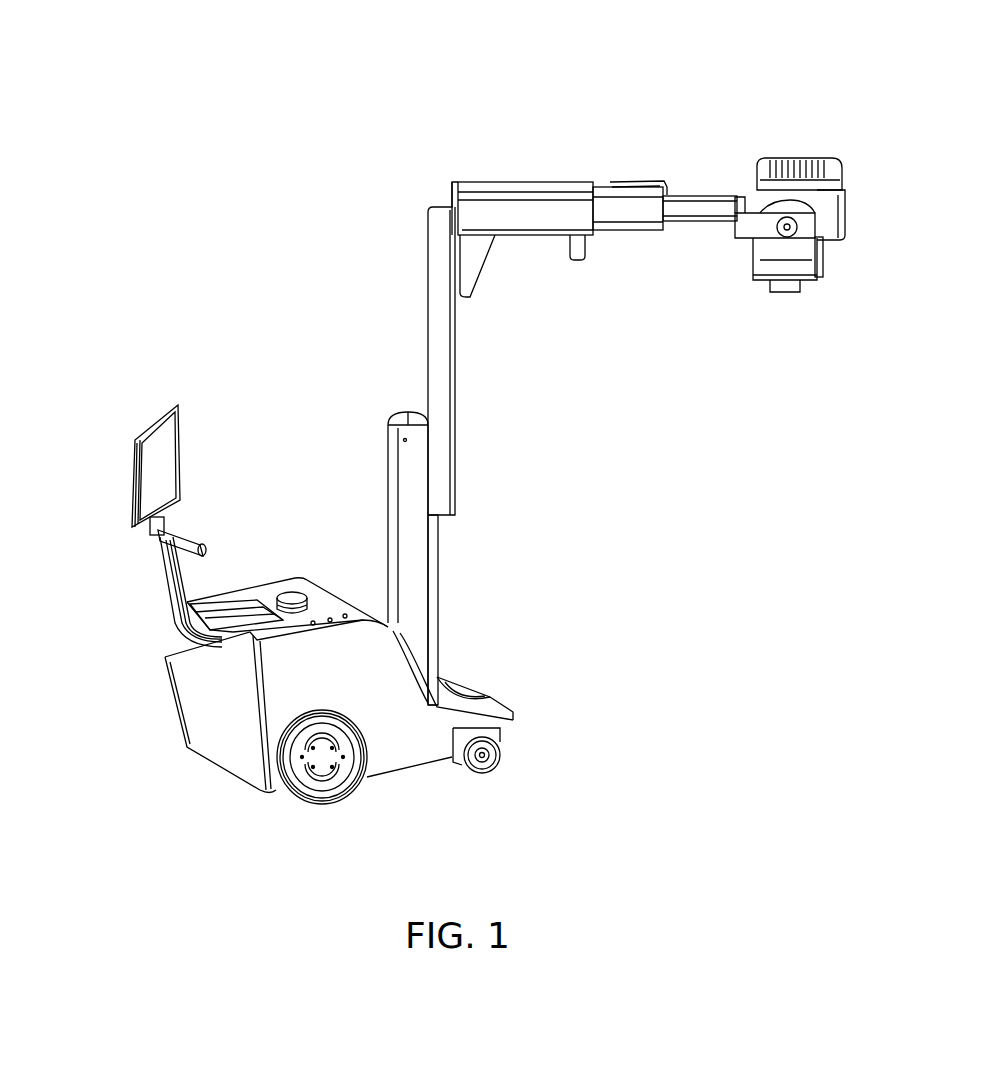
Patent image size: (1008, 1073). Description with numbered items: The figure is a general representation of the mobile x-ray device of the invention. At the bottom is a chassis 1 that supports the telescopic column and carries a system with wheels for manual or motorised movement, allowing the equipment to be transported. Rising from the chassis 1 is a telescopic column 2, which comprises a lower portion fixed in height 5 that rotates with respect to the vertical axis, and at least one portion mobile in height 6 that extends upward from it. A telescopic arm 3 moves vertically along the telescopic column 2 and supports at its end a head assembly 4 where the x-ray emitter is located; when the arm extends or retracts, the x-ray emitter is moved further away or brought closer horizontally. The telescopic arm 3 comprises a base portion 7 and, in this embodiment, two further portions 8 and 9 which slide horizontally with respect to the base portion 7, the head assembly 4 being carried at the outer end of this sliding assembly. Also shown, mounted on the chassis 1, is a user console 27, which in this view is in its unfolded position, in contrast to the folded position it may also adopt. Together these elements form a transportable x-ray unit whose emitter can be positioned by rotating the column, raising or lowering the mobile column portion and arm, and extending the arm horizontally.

The chassis 1 is at (392, 740).
The telescopic column 2 is at (452, 443).
The telescopic arm 3 is at (637, 238).
The head assembly 4 is at (840, 286).
The lower portion fixed in height 5 is at (476, 627).
The portion mobile in height 6 is at (480, 362).
The base portion 7 is at (520, 162).
The horizontally mobile portion 8 is at (628, 160).
The horizontally mobile portion 9 is at (712, 172).
The user console 27 is at (115, 425).